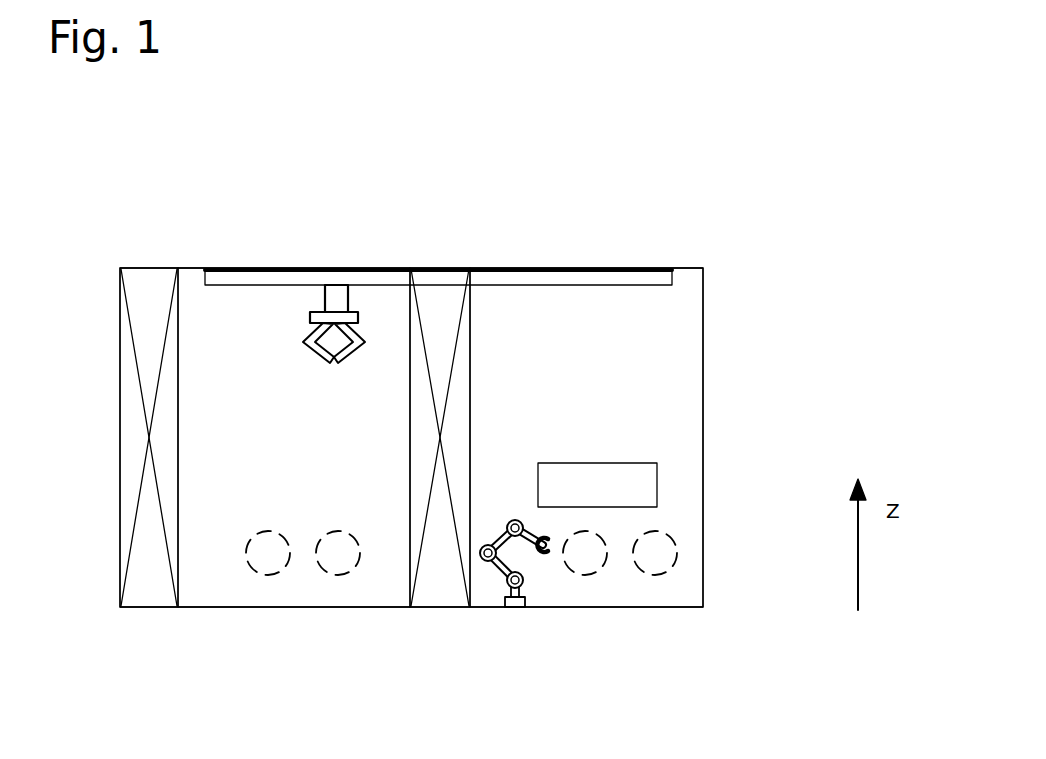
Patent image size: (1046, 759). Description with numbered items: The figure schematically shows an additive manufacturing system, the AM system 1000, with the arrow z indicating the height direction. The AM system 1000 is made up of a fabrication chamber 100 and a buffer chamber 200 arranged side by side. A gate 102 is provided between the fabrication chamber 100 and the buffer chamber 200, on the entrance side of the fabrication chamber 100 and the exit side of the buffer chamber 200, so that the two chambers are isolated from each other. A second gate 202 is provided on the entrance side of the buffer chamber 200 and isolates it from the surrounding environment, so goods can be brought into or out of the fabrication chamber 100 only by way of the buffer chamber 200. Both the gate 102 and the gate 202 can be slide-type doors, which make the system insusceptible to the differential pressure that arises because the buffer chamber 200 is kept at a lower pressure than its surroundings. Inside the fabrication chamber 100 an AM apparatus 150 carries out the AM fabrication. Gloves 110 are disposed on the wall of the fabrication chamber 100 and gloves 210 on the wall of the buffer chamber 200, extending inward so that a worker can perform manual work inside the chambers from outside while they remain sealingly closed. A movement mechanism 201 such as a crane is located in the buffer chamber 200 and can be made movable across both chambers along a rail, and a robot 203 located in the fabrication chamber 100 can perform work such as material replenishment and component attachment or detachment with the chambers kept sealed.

The AM system 1000 is at (458, 155).
The fabrication chamber 100 is at (653, 318).
The gate 102 is at (447, 307).
The gloves 110 is at (655, 577).
The AM apparatus 150 is at (657, 493).
The buffer chamber 200 is at (220, 318).
The movement mechanism 201 is at (333, 293).
The gate 202 is at (151, 281).
The robot 203 is at (503, 568).
The gloves 210 is at (338, 577).